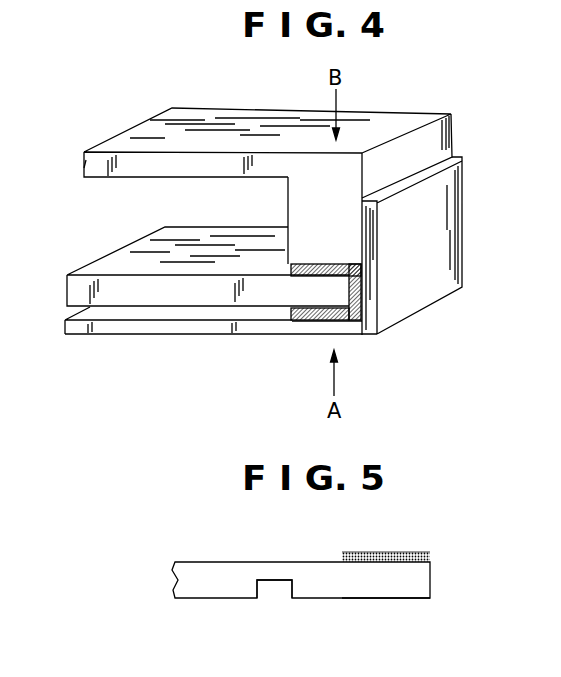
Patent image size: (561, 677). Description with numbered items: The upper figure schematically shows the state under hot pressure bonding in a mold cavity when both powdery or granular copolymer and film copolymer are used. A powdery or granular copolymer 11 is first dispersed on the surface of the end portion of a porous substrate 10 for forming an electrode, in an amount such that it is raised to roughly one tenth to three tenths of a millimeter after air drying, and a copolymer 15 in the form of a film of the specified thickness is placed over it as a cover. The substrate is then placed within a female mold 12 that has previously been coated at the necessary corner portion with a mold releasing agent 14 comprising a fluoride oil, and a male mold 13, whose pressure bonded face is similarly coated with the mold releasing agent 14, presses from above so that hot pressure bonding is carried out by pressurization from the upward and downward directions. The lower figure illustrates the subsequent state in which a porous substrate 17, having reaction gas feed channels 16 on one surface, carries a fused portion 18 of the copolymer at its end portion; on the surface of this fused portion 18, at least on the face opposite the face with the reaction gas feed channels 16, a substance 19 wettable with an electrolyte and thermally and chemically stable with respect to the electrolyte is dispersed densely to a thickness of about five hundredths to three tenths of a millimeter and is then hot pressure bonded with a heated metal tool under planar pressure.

In FIG. 4, the porous substrate 10 is at (182, 300).
In FIG. 4, the powdery or granular copolymer 11 is at (302, 310).
In FIG. 4, the female mold 12 is at (450, 225).
In FIG. 4, the male mold 13 is at (440, 143).
In FIG. 4, the mold releasing agent 14 is at (307, 263).
In FIG. 4, the film copolymer 15 is at (320, 320).
In FIG. 5, the reaction gas feed channels 16 is at (267, 590).
In FIG. 5, the porous substrate 17 is at (283, 562).
In FIG. 5, the fused portion 18 is at (387, 600).
In FIG. 5, the electrolyte-wettable substance 19 is at (378, 552).